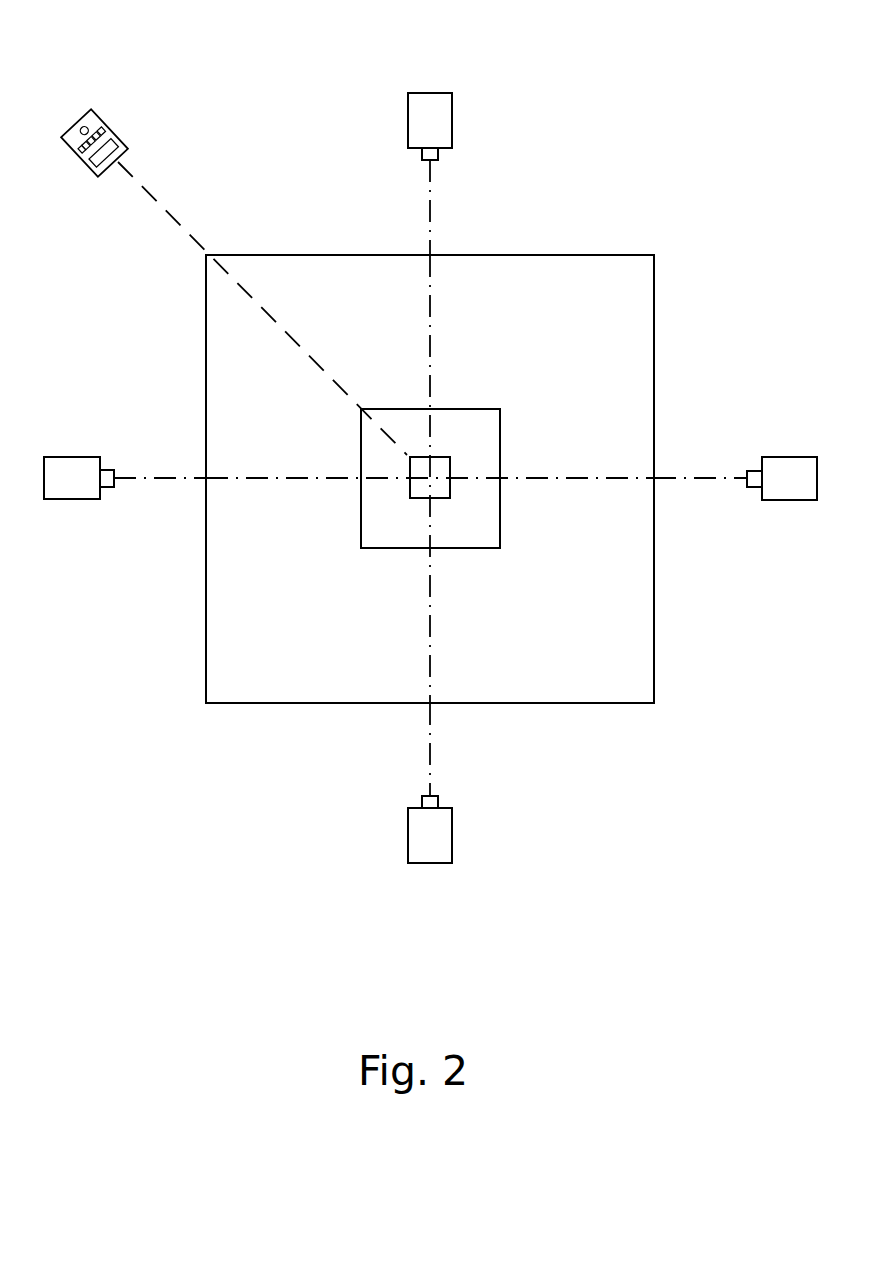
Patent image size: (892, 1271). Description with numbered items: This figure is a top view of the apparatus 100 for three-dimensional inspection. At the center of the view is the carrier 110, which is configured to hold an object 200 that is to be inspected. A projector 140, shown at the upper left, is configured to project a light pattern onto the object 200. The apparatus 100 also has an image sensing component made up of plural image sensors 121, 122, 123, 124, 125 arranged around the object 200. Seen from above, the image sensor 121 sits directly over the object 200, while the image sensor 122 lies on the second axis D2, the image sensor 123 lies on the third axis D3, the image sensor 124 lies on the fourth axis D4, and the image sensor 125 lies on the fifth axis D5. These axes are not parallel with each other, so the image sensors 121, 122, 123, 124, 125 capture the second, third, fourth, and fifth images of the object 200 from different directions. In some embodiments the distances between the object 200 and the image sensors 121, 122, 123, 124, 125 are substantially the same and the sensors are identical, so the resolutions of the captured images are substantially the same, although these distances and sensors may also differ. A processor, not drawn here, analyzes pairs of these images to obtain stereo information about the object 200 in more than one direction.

The apparatus for three-dimensional inspection 100 is at (764, 60).
The carrier 110 is at (243, 687).
The image sensor 121 is at (451, 470).
The image sensor 122 is at (797, 468).
The image sensor 123 is at (432, 105).
The image sensor 124 is at (432, 850).
The image sensor 125 is at (70, 470).
The projector 140 is at (118, 135).
The object 200 is at (380, 523).
The second axis D2 is at (688, 476).
The third axis D3 is at (432, 215).
The fourth axis D4 is at (432, 738).
The fifth axis D5 is at (170, 472).